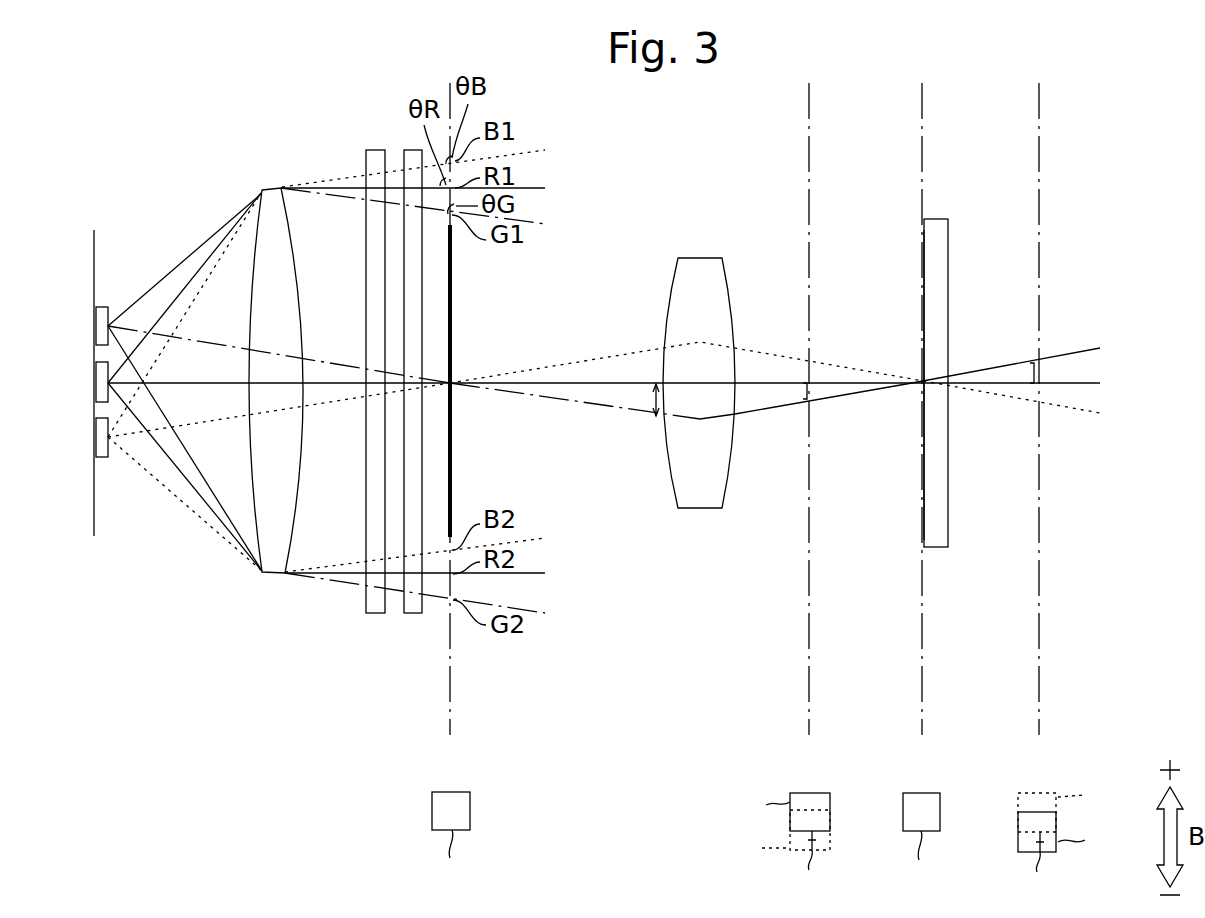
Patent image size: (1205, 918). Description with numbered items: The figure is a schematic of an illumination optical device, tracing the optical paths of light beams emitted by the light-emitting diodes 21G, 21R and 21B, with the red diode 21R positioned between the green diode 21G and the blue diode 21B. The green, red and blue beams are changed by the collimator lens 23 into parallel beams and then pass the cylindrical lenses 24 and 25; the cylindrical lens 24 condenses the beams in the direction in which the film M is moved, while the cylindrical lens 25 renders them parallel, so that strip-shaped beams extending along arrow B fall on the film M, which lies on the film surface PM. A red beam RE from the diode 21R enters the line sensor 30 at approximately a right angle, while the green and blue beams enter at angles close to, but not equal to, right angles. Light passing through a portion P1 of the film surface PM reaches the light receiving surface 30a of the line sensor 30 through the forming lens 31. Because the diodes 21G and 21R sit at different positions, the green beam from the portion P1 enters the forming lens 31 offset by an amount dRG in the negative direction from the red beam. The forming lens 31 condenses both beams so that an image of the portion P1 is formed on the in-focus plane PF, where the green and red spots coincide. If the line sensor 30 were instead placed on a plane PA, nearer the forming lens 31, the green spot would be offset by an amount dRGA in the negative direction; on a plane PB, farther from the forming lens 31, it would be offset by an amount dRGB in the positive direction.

The light-emitting diode 21G is at (94, 326).
The light-emitting diode 21R is at (94, 383).
The light-emitting diode 21B is at (94, 437).
The collimator lens 23 is at (274, 215).
The cylindrical lens 24 is at (376, 162).
The cylindrical lens 25 is at (413, 162).
The line sensor 30 is at (938, 214).
The light receiving surface 30a is at (923, 244).
The forming lens 31 is at (698, 268).
The film M is at (452, 446).
The portion P1 is at (470, 359).
The film surface PM is at (474, 489).
The plane PA is at (775, 471).
The in-focus plane PF is at (922, 489).
The plane PB is at (1070, 469).
The light beam RE is at (546, 186).
The offset amount dRG is at (653, 398).
The offset amount dRGA is at (808, 392).
The offset amount dRGB is at (1033, 365).